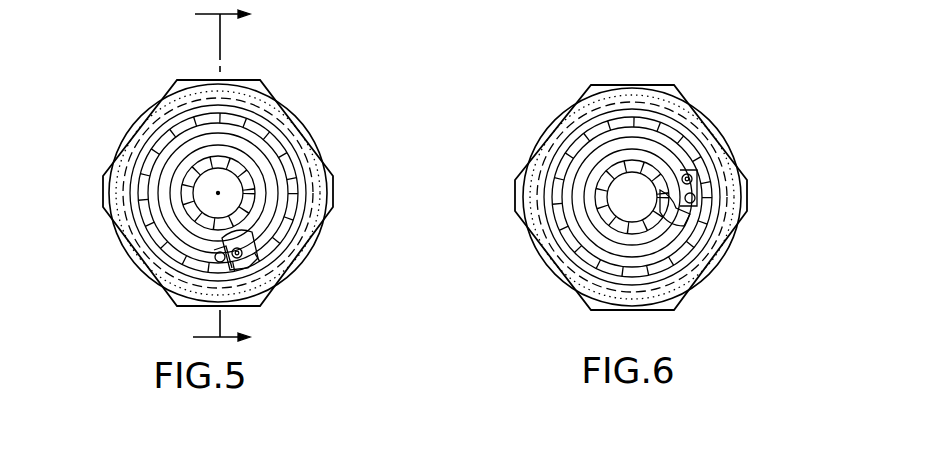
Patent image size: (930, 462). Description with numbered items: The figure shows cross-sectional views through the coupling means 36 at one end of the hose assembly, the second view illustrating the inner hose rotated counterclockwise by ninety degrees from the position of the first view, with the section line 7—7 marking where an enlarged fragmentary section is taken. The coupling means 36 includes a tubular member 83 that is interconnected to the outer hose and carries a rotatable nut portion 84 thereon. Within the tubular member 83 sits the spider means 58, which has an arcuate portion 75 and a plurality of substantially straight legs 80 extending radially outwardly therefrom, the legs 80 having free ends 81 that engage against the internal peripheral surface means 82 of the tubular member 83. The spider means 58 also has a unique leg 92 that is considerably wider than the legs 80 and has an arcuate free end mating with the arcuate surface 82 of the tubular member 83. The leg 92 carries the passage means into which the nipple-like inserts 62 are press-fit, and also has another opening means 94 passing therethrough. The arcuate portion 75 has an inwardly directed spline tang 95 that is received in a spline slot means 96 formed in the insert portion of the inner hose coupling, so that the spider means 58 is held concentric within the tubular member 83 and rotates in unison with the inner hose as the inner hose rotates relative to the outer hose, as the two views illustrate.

In FIG. 5, the section line 7— 7 is at (234, 178).
In FIG. 5, the coupling means 36 is at (298, 103).
In FIG. 6, the coupling means 36 is at (712, 105).
In FIG. 5, the spider means 58 is at (277, 193).
In FIG. 6, the spider means 58 is at (578, 220).
In FIG. 5, the nipple-like inserts 62 is at (238, 257).
In FIG. 6, the nipple-like inserts 62 is at (693, 178).
In FIG. 5, the arcuate portion 75 is at (200, 150).
In FIG. 5, the legs 80 is at (170, 172).
In FIG. 6, the legs 80 is at (600, 152).
In FIG. 5, the free ends 81 is at (267, 170).
In FIG. 6, the free ends 81 is at (613, 240).
In FIG. 5, the internal peripheral surface means 82 is at (178, 150).
In FIG. 6, the internal peripheral surface means 82 is at (650, 130).
In FIG. 5, the tubular member 83 is at (243, 117).
In FIG. 6, the tubular member 83 is at (628, 118).
In FIG. 5, the rotatable nut portion 84 is at (103, 190).
In FIG. 6, the rotatable nut portion 84 is at (580, 92).
In FIG. 5, the leg 92 is at (232, 268).
In FIG. 6, the leg 92 is at (700, 191).
In FIG. 5, the opening means 94 is at (220, 260).
In FIG. 6, the opening means 94 is at (696, 201).
In FIG. 5, the spline tang 95 is at (240, 212).
In FIG. 6, the spline tang 95 is at (665, 195).
In FIG. 5, the spline slot means 96 is at (217, 242).
In FIG. 6, the spline slot means 96 is at (700, 210).